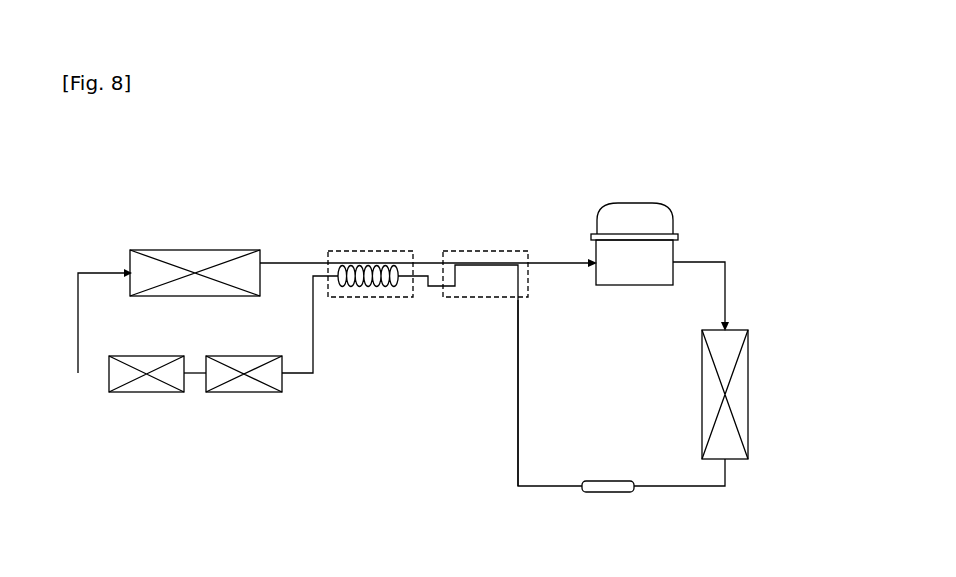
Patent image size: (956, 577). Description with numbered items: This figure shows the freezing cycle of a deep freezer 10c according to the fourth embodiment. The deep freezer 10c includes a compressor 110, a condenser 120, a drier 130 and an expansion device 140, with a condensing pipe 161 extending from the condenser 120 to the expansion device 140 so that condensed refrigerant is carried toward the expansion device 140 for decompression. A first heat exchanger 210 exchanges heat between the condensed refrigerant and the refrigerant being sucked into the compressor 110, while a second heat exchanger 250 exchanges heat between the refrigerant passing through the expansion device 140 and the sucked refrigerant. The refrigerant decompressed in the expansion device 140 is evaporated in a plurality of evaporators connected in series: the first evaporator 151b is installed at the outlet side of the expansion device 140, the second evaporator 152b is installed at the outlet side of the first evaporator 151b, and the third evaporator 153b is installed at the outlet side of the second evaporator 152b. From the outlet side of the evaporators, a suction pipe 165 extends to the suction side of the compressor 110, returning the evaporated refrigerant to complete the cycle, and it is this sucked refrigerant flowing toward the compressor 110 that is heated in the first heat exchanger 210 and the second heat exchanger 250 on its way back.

The deep freezer 10c is at (472, 170).
The compressor 110 is at (665, 214).
The condenser 120 is at (752, 398).
The drier 130 is at (608, 493).
The expansion device 140 is at (368, 287).
The first evaporator 151b is at (247, 393).
The second evaporator 152b is at (147, 393).
The third evaporator 153b is at (196, 250).
The condensing pipe 161 is at (516, 407).
The suction pipe 165 is at (560, 258).
The first heat exchanger 210 is at (495, 250).
The second heat exchanger 250 is at (371, 250).